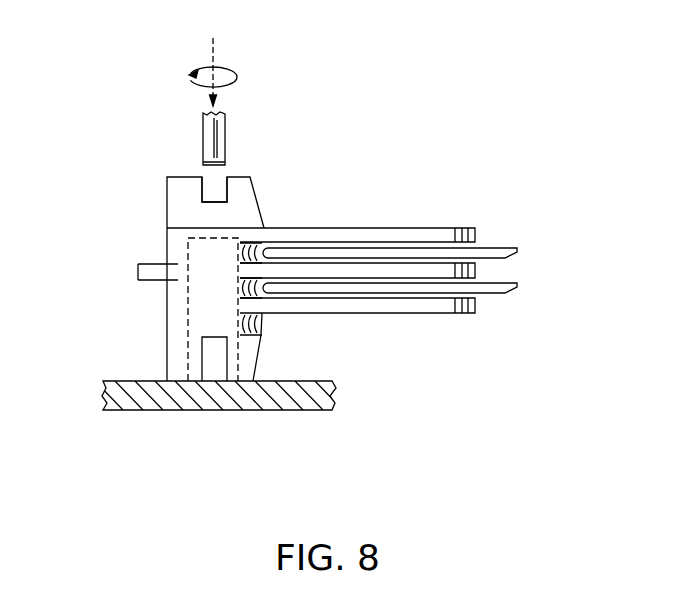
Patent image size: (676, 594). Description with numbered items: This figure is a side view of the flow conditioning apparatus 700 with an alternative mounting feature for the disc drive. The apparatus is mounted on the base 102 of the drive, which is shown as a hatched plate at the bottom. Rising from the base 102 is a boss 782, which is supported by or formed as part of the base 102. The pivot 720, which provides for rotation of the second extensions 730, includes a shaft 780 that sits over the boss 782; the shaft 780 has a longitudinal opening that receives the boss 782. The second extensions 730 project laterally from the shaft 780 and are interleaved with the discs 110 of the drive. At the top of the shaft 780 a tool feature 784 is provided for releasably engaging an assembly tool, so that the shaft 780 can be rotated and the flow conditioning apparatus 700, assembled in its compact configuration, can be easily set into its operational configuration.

The flow conditioning apparatus 700 is at (472, 60).
The pivot 720 is at (305, 208).
The second extensions 730 is at (418, 229).
The discs 110 is at (498, 245).
The tool feature 784 is at (202, 190).
The shaft 780 is at (167, 240).
The boss 782 is at (240, 343).
The base 102 is at (143, 383).